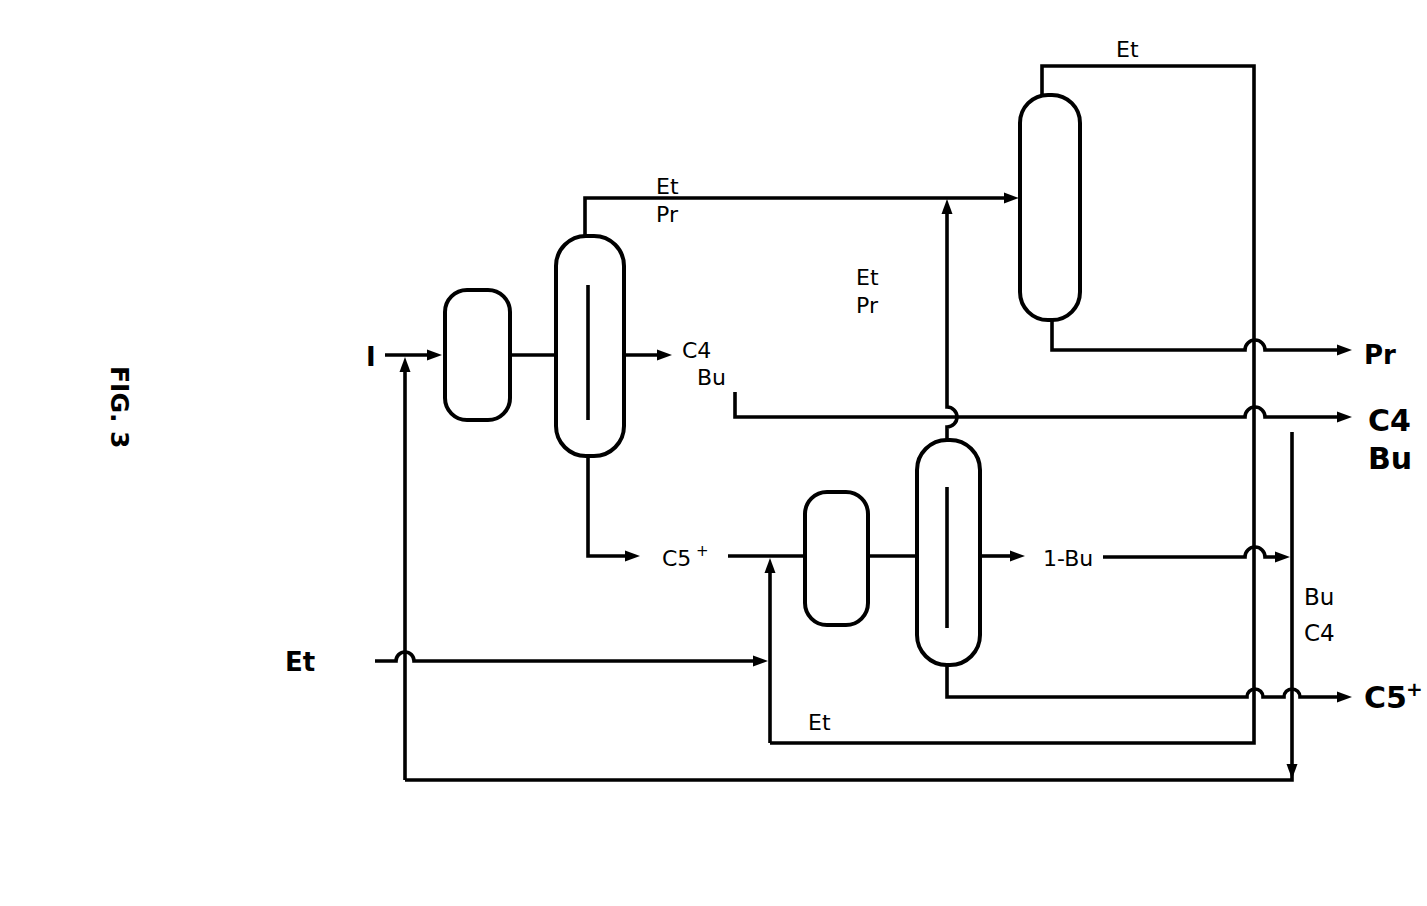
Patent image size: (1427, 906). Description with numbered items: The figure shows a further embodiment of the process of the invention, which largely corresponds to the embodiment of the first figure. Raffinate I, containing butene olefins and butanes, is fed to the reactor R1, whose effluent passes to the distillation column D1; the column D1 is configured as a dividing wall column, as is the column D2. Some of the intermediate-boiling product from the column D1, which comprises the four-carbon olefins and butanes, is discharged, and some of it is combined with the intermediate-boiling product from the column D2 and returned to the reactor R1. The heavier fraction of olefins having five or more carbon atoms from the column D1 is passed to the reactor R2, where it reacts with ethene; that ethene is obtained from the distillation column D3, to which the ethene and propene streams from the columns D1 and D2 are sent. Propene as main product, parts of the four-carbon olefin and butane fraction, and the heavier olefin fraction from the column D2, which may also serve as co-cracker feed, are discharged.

The reactor R1 is at (477, 355).
The distillation column D1 is at (590, 346).
The reactor R2 is at (836, 558).
The column D2 is at (948, 552).
The distillation column D3 is at (1050, 207).